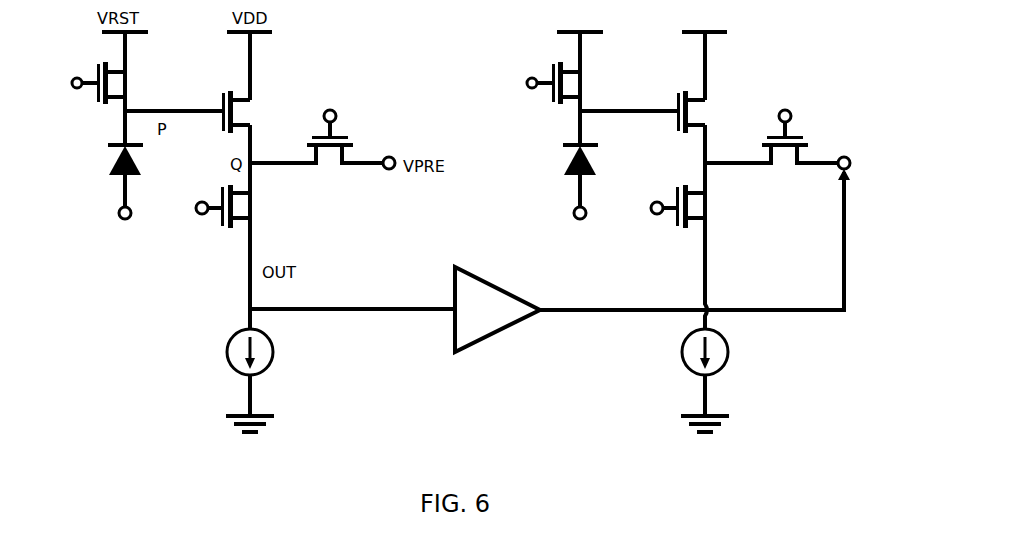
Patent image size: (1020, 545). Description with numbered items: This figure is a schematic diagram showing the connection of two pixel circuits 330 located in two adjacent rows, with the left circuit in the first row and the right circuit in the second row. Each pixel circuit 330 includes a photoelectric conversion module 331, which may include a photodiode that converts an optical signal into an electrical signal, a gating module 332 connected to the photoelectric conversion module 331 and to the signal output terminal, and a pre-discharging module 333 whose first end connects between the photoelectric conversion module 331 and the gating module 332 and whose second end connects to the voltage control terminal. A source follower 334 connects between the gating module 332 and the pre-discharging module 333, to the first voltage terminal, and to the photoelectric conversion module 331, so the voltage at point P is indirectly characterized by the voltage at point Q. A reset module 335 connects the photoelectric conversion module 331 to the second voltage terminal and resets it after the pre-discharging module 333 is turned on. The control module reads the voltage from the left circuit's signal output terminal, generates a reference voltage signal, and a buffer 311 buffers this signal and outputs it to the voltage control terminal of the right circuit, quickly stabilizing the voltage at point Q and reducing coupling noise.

The buffer 311 is at (450, 335).
The pixel circuit 330 is at (778, 38).
The photoelectric conversion module 331 is at (105, 178).
The gating module 332 is at (222, 225).
The pre-discharging module 333 is at (344, 130).
The source follower 334 is at (220, 108).
The reset module 335 is at (93, 98).